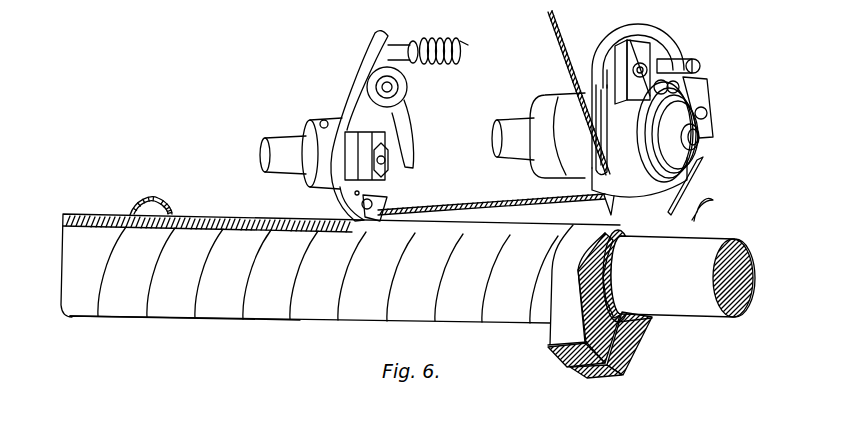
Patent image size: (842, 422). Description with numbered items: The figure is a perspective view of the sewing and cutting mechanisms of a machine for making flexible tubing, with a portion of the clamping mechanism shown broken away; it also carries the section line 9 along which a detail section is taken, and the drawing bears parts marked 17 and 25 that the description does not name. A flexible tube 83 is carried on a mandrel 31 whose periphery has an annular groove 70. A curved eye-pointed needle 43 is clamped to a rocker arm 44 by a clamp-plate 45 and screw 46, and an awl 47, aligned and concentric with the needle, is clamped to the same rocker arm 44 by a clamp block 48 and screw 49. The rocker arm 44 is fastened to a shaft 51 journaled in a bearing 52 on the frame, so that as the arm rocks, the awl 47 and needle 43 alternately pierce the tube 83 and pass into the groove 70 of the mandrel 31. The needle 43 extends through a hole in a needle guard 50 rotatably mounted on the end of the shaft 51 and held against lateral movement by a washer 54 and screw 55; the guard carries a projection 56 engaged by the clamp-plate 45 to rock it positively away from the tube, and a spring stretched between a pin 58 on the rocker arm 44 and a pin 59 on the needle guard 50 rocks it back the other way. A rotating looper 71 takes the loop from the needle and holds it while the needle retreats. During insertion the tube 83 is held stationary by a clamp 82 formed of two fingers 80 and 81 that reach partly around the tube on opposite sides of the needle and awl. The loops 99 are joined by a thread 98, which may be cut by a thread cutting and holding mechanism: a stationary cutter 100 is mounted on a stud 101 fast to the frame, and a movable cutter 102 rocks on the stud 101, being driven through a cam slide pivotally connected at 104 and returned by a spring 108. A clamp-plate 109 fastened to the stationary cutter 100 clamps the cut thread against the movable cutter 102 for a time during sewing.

The section line 9- 9 is at (398, 191).
The bracket flange edge 17 is at (647, 325).
The drum 25 is at (175, 302).
The mandrel 31 is at (740, 300).
The curved eye-pointed needle 43 is at (596, 167).
The rocker arm 44 is at (612, 42).
The clamp-plate 45 is at (637, 43).
The screw 46 is at (647, 68).
The awl 47 is at (690, 185).
The clamp block 48 is at (711, 99).
The screw 49 is at (708, 116).
The needle guard 50 is at (631, 187).
The shaft 51 is at (518, 147).
The bearing 52 is at (550, 100).
The washer 54 is at (694, 160).
The screw 55 is at (706, 143).
The projection 56 is at (662, 72).
The pin 58 is at (701, 67).
The pin 59 is at (680, 87).
The annular groove 70 is at (623, 277).
The looper 71 is at (708, 218).
The clamp finger 80 is at (575, 367).
The clamp finger 81 is at (623, 376).
The clamp 82 is at (591, 320).
The tube 83 is at (503, 322).
The thread 98 is at (442, 206).
The loops 99 is at (176, 203).
The stationary cutter 100 is at (332, 193).
The stud 101 is at (274, 158).
The movable cutter 102 is at (380, 192).
The pivotal connection 104 is at (396, 88).
The spring 108 is at (440, 64).
The clamp-plate 109 is at (375, 223).